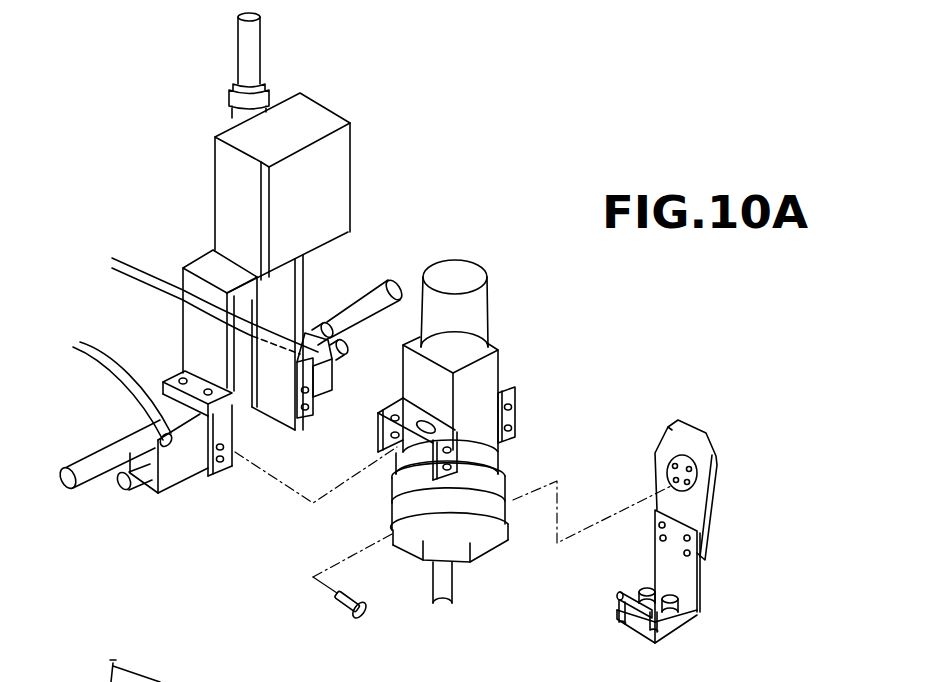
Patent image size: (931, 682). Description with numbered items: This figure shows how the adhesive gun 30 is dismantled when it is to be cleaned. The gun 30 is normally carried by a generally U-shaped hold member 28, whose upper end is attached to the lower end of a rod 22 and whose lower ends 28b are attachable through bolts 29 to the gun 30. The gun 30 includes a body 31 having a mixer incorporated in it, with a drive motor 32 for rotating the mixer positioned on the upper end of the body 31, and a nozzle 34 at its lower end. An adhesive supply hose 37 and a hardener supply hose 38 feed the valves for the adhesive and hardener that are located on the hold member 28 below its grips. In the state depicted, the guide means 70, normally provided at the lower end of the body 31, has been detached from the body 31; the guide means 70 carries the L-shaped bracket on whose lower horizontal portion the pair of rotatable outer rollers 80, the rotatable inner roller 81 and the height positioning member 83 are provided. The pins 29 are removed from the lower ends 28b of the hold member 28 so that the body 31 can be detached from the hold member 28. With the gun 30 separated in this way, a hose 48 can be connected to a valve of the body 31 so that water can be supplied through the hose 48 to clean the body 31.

The rod 22 is at (250, 53).
The hold member 28 is at (203, 263).
The lower end of the hold member 28b is at (220, 430).
The bolt 29 is at (343, 611).
The gun 30 is at (545, 141).
The body 31 is at (483, 427).
The drive motor 32 is at (450, 268).
The nozzle 34 is at (447, 595).
The adhesive supply hose 37 is at (92, 358).
The hardener supply hose 38 is at (143, 282).
The hose 48 is at (265, 681).
The guide means 70 is at (722, 522).
The outer roller 80 is at (651, 587).
The inner roller 81 is at (618, 622).
The height positioning member 83 is at (633, 592).